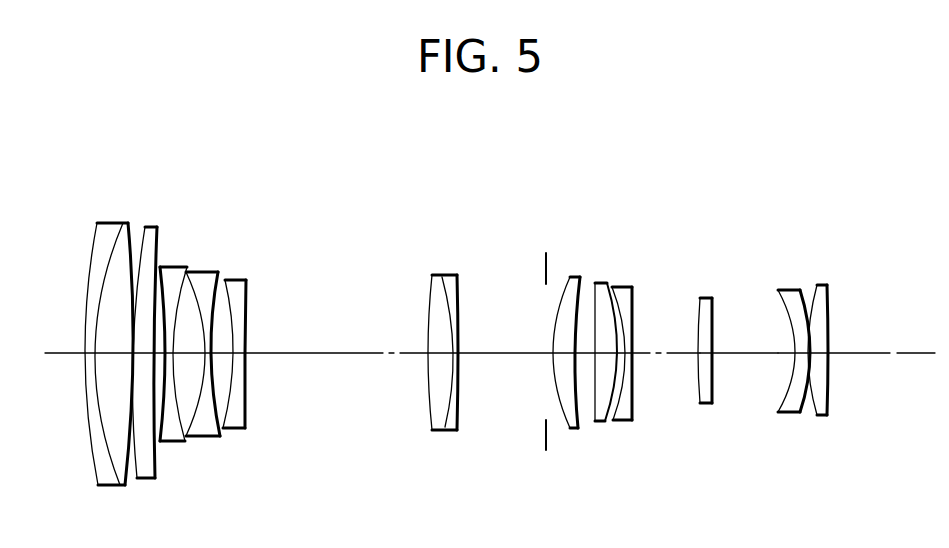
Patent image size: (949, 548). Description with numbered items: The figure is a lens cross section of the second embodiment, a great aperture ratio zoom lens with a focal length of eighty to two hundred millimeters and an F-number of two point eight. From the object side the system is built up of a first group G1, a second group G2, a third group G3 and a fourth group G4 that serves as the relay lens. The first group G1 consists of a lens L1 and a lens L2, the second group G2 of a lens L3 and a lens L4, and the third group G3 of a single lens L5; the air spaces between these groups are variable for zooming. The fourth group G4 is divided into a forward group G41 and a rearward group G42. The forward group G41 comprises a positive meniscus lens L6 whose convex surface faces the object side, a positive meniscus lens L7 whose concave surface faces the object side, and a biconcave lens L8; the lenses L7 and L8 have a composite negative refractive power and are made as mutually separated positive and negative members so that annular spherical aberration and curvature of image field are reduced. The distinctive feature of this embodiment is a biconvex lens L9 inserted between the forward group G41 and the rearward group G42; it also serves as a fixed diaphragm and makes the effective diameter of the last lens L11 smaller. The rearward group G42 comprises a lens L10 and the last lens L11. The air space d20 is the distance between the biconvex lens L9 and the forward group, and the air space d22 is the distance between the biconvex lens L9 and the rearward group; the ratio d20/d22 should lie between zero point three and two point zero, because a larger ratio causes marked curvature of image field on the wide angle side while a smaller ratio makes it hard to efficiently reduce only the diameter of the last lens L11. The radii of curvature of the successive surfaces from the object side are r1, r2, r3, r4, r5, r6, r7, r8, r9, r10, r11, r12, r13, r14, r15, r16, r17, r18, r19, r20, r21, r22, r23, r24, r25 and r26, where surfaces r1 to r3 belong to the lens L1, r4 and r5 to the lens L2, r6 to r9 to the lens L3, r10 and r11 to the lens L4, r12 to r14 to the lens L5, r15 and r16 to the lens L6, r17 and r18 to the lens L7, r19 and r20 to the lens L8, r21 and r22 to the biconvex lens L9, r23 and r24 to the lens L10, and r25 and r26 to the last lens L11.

The first group G1 is at (163, 176).
The second group G2 is at (267, 202).
The third group G3 is at (443, 233).
The fourth group G4 is at (837, 169).
The forward group G41 is at (655, 214).
The rearward group G42 is at (845, 219).
The first lens L1 is at (133, 217).
The second lens L2 is at (150, 228).
The third lens L3 is at (220, 262).
The fourth lens L4 is at (237, 280).
The fifth lens L5 is at (462, 274).
The positive meniscus lens L6 is at (575, 277).
The positive meniscus lens L7 is at (598, 283).
The biconcave lens L8 is at (625, 287).
The biconvex lens L9 is at (707, 298).
The tenth lens L10 is at (785, 290).
The last lens L11 is at (822, 285).
The radius of curvature r1 is at (95, 466).
The radius of curvature r2 is at (117, 480).
The radius of curvature r3 is at (127, 488).
The radius of curvature r4 is at (139, 470).
The radius of curvature r5 is at (156, 474).
The radius of curvature r6 is at (168, 444).
The radius of curvature r7 is at (187, 442).
The radius of curvature r8 is at (210, 437).
The radius of curvature r9 is at (222, 437).
The radius of curvature r10 is at (243, 425).
The radius of curvature r11 is at (247, 415).
The radius of curvature r12 is at (430, 415).
The radius of curvature r13 is at (448, 417).
The radius of curvature r14 is at (457, 414).
The radius of curvature r15 is at (568, 410).
The radius of curvature r16 is at (577, 418).
The radius of curvature r17 is at (595, 414).
The radius of curvature r18 is at (607, 411).
The radius of curvature r19 is at (617, 410).
The radius of curvature r20 is at (632, 398).
The radius of curvature r21 is at (700, 398).
The radius of curvature r22 is at (713, 392).
The radius of curvature r23 is at (785, 398).
The radius of curvature r24 is at (807, 398).
The radius of curvature r25 is at (815, 408).
The radius of curvature r26 is at (828, 405).
The air space d20 is at (680, 350).
The air space d22 is at (755, 350).